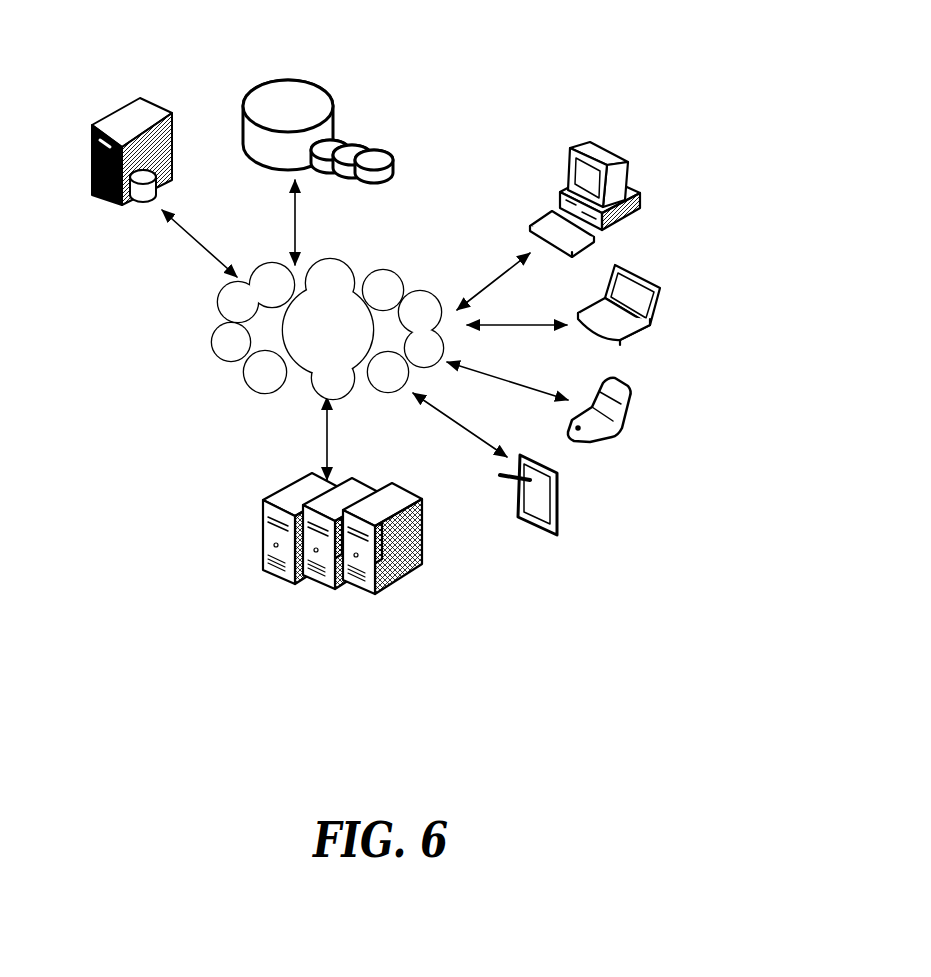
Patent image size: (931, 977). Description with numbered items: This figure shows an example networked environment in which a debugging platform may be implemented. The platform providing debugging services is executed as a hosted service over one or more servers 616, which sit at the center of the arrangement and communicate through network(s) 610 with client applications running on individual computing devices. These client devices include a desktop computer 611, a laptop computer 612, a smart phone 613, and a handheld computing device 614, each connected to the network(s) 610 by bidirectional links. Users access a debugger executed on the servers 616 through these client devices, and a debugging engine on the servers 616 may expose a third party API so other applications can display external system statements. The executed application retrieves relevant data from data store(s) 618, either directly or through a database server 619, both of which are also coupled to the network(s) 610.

The network(s) 610 is at (334, 249).
The desktop computer 611 is at (627, 132).
The laptop computer 612 is at (660, 262).
The smart phone 613 is at (630, 379).
The handheld computing device 614 is at (567, 496).
The servers 616 is at (293, 480).
The data store(s) 618 is at (304, 56).
The database server 619 is at (137, 219).